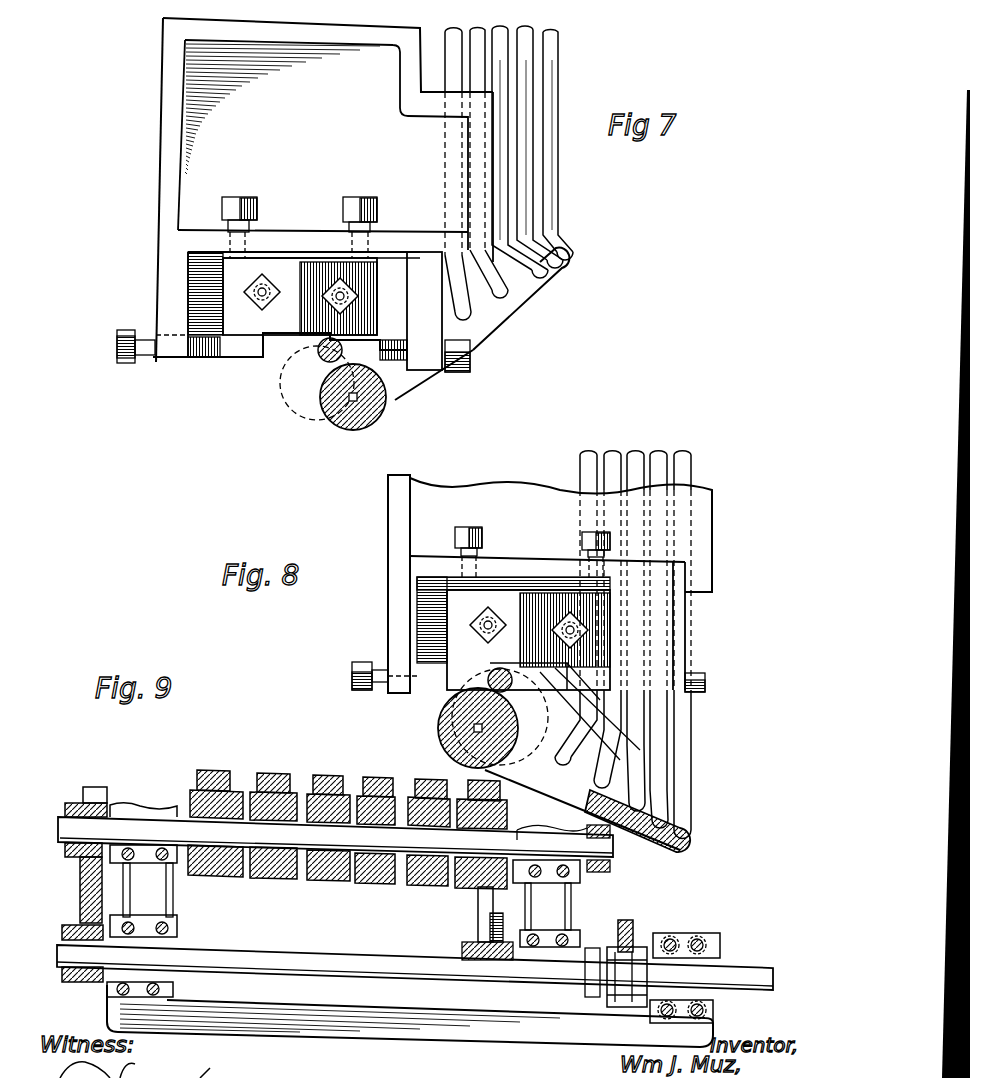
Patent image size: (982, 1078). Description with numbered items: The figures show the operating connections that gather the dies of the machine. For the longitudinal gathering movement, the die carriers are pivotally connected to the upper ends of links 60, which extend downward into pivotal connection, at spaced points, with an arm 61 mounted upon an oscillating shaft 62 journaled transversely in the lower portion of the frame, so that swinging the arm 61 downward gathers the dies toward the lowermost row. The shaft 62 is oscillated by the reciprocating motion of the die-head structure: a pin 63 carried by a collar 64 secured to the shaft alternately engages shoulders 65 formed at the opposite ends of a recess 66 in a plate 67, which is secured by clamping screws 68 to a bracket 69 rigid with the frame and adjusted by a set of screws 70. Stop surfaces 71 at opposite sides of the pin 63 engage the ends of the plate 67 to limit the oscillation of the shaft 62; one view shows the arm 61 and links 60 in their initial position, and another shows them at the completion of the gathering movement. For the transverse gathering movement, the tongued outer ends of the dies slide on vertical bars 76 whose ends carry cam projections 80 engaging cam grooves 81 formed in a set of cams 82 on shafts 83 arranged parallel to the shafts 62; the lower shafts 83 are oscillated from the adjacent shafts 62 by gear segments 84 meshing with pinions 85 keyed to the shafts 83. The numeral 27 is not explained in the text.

In FIG. 9, the base plate 27 is at (310, 1038).
In FIG. 7, the links 60 is at (548, 88).
In FIG. 8, the links 60 is at (672, 455).
In FIG. 7, the arm 61 is at (565, 262).
In FIG. 8, the arm 61 is at (690, 838).
In FIG. 9, the arm 61 is at (505, 926).
In FIG. 7, the oscillating shaft 62 is at (332, 432).
In FIG. 8, the oscillating shaft 62 is at (440, 720).
In FIG. 9, the oscillating shaft 62 is at (478, 898).
In FIG. 7, the pin 63 is at (326, 340).
In FIG. 8, the pin 63 is at (512, 684).
In FIG. 9, the pin 63 is at (618, 940).
In FIG. 7, the collar 64 is at (395, 404).
In FIG. 8, the collar 64 is at (442, 748).
In FIG. 8, the shoulders 65 is at (506, 672).
In FIG. 8, the recess 66 is at (524, 663).
In FIG. 8, the plate 67 is at (523, 605).
In FIG. 7, the clamping screws 68 is at (270, 275).
In FIG. 8, the clamping screws 68 is at (478, 618).
In FIG. 7, the bracket 69 is at (156, 300).
In FIG. 8, the bracket 69 is at (388, 632).
In FIG. 7, the screws 70 is at (162, 126).
In FIG. 8, the screws 70 is at (590, 532).
In FIG. 7, the stop surfaces 71 is at (310, 404).
In FIG. 8, the stop surfaces 71 is at (432, 700).
In FIG. 9, the vertical bars 76 is at (265, 773).
In FIG. 9, the cam projections 80 is at (198, 776).
In FIG. 9, the cam grooves 81 is at (228, 880).
In FIG. 9, the cams 82 is at (300, 882).
In FIG. 9, the shafts 83 is at (614, 848).
In FIG. 9, the gear segments 84 is at (80, 893).
In FIG. 9, the pinions 85 is at (88, 787).